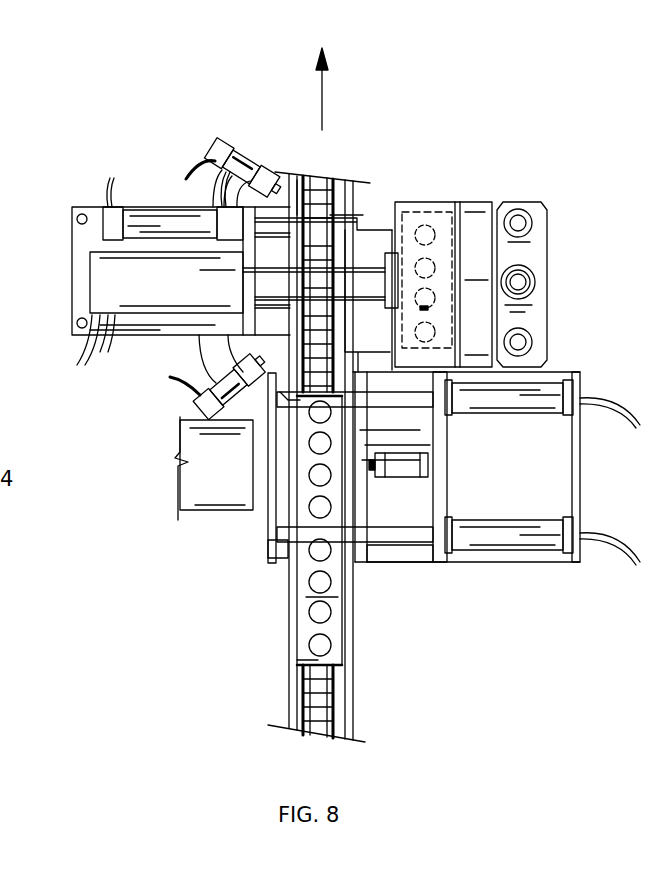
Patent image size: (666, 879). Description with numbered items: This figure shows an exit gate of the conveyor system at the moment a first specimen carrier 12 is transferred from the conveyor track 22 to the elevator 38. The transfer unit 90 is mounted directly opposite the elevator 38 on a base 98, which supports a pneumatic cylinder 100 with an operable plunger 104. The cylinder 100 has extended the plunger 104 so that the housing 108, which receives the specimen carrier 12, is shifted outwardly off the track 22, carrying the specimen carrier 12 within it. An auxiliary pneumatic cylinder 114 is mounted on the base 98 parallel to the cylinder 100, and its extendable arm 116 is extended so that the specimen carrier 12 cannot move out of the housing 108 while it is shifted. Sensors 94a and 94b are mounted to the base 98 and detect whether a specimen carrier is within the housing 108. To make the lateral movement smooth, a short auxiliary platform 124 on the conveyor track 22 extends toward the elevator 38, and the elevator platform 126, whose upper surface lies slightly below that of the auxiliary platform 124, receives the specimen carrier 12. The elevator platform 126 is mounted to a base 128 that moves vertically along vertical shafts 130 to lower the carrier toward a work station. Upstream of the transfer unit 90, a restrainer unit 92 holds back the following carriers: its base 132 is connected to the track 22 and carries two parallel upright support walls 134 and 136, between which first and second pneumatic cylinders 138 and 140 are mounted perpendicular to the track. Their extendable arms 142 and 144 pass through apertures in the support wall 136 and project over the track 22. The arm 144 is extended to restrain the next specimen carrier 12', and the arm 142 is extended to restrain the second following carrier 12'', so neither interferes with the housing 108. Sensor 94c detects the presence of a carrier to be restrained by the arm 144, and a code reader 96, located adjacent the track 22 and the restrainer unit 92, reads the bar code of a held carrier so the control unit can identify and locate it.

The specimen carrier 12 is at (339, 439).
The specimen carrier 12' is at (278, 530).
The specimen carrier 12'' is at (261, 684).
The conveyor track 22 is at (268, 513).
The elevator 38 is at (432, 165).
The transfer unit 90 is at (167, 350).
The restrainer unit 92 is at (515, 578).
The sensor 94a is at (258, 160).
The sensor 94b is at (197, 403).
The sensor 94c is at (408, 467).
The code reader 96 is at (210, 473).
The base 98 is at (77, 278).
The pneumatic cylinder 100 is at (143, 302).
The plunger 104 is at (392, 288).
The housing 108 is at (440, 230).
The auxiliary pneumatic cylinder 114 is at (160, 223).
The extendable arm 116 is at (303, 197).
The auxiliary platform 124 is at (378, 210).
The elevator platform 126 is at (425, 200).
The base 128 is at (530, 207).
The vertical shafts 130 is at (530, 337).
The base 132 is at (395, 565).
The support wall 134 is at (583, 463).
The support wall 136 is at (443, 445).
The first pneumatic cylinder 138 is at (532, 413).
The second pneumatic cylinder 140 is at (530, 552).
The extendable arm 142 is at (410, 545).
The extendable arm 144 is at (393, 408).